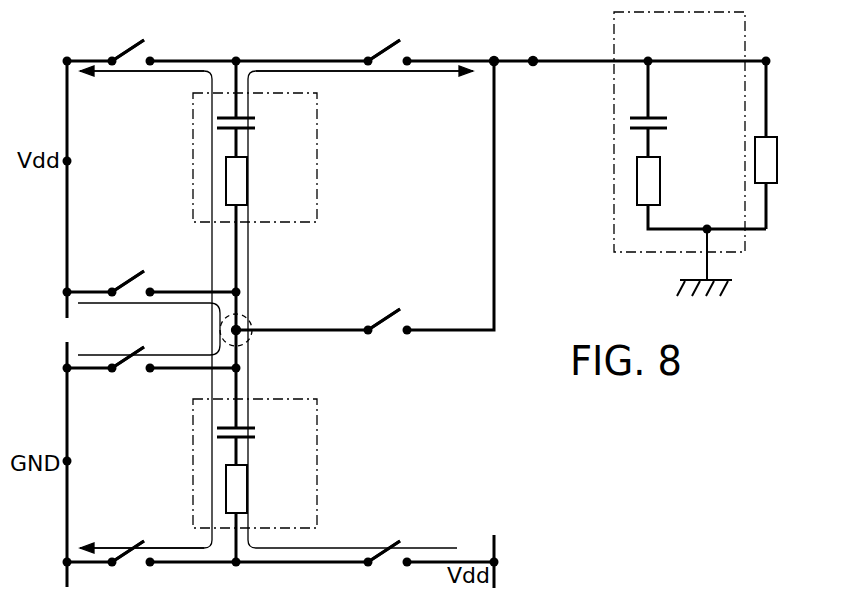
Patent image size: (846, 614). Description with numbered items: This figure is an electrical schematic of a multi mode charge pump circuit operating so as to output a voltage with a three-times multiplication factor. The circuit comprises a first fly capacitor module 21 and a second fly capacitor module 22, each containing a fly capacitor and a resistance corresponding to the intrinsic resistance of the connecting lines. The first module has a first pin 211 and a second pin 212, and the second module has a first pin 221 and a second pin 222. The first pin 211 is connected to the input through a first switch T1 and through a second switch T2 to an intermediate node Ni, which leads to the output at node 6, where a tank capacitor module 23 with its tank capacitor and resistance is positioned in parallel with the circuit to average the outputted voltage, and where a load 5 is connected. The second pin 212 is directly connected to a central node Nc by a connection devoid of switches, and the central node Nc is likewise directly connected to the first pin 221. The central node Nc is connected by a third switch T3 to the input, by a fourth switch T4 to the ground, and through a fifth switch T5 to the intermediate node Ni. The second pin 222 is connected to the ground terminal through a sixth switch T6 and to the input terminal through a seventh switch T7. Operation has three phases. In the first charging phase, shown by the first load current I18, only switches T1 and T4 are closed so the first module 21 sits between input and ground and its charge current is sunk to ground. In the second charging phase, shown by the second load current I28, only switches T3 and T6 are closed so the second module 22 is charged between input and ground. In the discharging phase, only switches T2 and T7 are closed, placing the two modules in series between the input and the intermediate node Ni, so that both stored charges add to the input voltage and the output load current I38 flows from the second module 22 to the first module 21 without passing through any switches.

The load 5 is at (768, 57).
The output node Vout 6 is at (536, 66).
The first fly capacitor module 21 is at (318, 163).
The second fly capacitor module 22 is at (317, 470).
The tank capacitor module 23 is at (612, 146).
The first pin of the first fly capacitor module 211 is at (238, 72).
The second pin of the first fly capacitor module 212 is at (240, 243).
The first pin of the second fly capacitor module 221 is at (240, 388).
The second pin of the second fly capacitor module 222 is at (237, 538).
The first switch T1 is at (131, 50).
The second switch T2 is at (388, 50).
The third switch T3 is at (131, 281).
The fourth switch T4 is at (129, 359).
The fifth switch T5 is at (386, 322).
The sixth switch T6 is at (130, 553).
The seventh switch T7 is at (386, 554).
The first load current I18 is at (192, 72).
The second load current I28 is at (192, 550).
The output load current I38 is at (425, 74).
The central node Nc is at (238, 329).
The intermediate node Ni is at (493, 58).